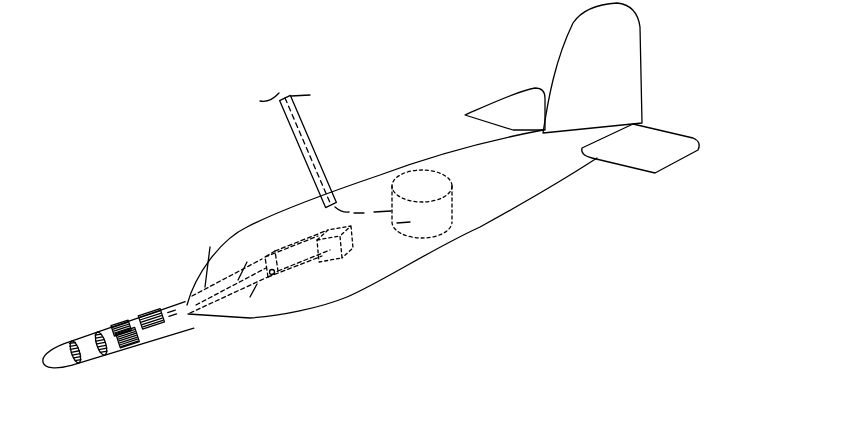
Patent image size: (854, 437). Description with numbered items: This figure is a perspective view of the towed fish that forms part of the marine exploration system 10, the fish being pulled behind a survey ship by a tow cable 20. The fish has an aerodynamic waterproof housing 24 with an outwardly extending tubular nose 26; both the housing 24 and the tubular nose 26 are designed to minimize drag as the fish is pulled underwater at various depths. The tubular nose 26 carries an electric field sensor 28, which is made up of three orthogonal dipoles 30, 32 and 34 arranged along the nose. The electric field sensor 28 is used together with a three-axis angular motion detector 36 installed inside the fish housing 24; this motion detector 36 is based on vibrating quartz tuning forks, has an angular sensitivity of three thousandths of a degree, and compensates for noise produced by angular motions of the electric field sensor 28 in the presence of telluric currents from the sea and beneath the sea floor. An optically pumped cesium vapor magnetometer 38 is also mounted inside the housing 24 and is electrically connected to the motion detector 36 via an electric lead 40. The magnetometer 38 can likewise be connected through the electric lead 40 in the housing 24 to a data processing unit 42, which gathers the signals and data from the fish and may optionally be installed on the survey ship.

The marine exploration system 10 is at (439, 48).
The tow cable 20 is at (305, 126).
The aerodynamic waterproof housing 24 is at (505, 198).
The tubular nose 26 is at (137, 321).
The electric field sensor 28 is at (134, 236).
The dipole 30 is at (163, 330).
The dipole 32 is at (73, 345).
The dipole 34 is at (117, 323).
The 3-axis angular motion detector 36 is at (307, 265).
The optically pumped cesium vapor magnetometer 38 is at (342, 248).
The electric lead 40 is at (310, 162).
The data processing unit 42 is at (437, 184).